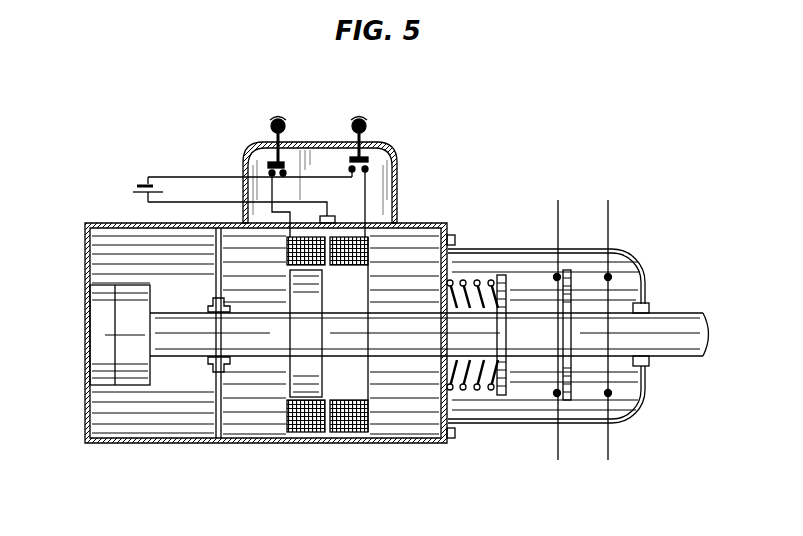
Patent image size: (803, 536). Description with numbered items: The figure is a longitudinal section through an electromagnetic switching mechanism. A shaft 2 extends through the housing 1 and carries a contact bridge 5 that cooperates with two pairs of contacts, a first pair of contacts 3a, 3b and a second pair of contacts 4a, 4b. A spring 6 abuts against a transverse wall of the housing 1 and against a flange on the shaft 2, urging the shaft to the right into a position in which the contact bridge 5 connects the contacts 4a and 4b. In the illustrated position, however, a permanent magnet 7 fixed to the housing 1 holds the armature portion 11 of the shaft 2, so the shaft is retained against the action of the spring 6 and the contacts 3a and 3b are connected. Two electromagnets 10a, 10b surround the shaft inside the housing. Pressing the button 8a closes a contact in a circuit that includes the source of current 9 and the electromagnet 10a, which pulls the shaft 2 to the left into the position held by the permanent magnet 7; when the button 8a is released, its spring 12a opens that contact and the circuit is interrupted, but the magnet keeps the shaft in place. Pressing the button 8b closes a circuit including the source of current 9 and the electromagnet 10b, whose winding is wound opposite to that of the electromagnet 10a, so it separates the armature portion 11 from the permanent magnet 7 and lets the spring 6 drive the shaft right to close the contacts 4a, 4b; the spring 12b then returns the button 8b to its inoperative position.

The housing 1 is at (494, 250).
The shaft 2 is at (676, 320).
The contact 3a is at (557, 276).
The contact 3b is at (557, 395).
The contact 4a is at (608, 276).
The contact 4b is at (608, 395).
The contact bridge 5 is at (569, 272).
The spring 6 is at (490, 394).
The permanent magnet 7 is at (100, 318).
The button 8a is at (280, 118).
The button 8b is at (361, 118).
The source of current 9 is at (140, 186).
The electromagnet 10a is at (304, 433).
The electromagnet 10b is at (355, 433).
The armature portion 11 is at (125, 305).
The spring 12a is at (270, 140).
The spring 12b is at (368, 140).